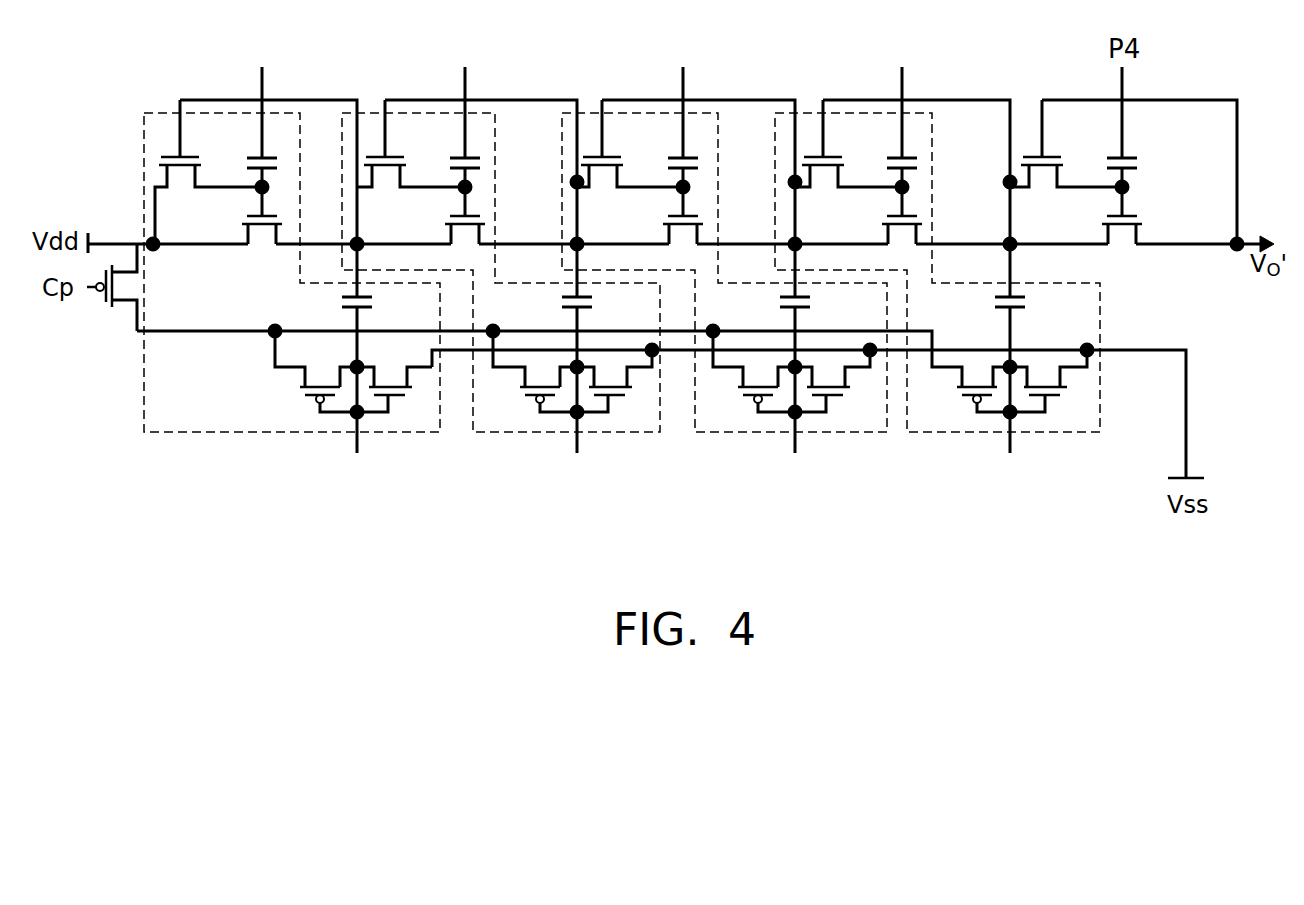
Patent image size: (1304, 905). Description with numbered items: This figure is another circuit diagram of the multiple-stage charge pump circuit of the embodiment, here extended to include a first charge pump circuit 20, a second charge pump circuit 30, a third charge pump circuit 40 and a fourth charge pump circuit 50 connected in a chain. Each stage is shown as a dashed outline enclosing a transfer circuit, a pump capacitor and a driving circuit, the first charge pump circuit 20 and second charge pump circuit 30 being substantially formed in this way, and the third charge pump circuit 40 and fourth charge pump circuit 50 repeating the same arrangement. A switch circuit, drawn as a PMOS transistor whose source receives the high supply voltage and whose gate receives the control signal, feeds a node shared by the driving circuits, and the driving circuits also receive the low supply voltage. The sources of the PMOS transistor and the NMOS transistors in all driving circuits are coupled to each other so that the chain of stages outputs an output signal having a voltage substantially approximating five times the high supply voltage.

The first charge pump circuit 20 is at (280, 433).
The second charge pump circuit 30 is at (523, 433).
The third charge pump circuit 40 is at (745, 433).
The fourth charge pump circuit 50 is at (962, 433).